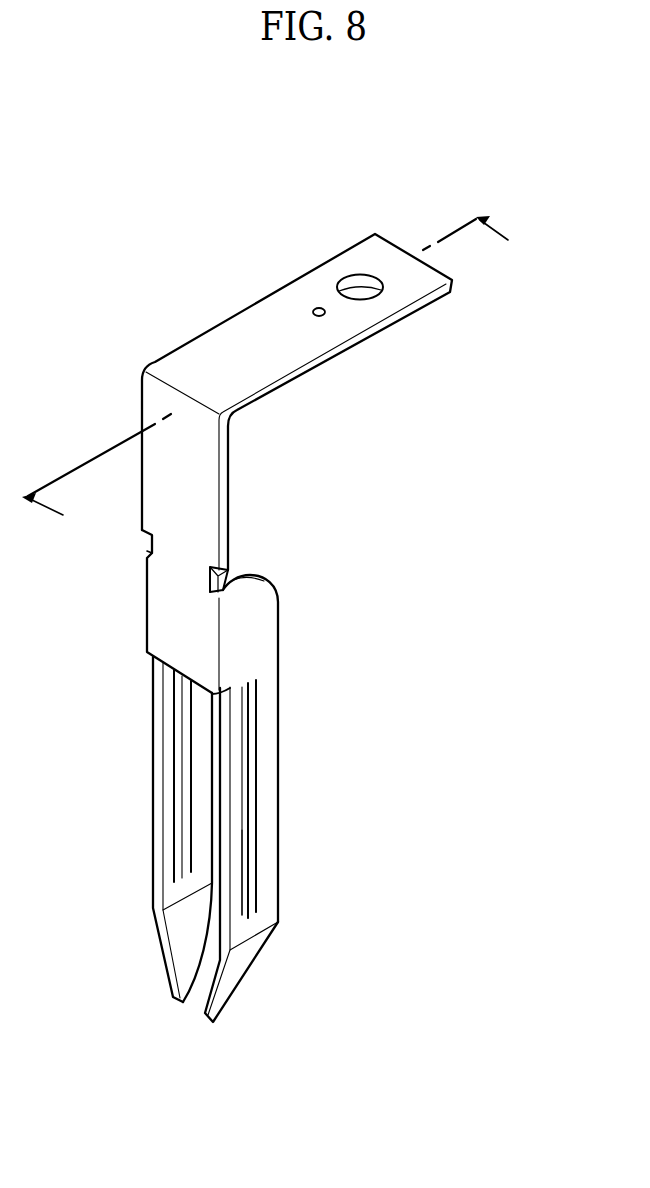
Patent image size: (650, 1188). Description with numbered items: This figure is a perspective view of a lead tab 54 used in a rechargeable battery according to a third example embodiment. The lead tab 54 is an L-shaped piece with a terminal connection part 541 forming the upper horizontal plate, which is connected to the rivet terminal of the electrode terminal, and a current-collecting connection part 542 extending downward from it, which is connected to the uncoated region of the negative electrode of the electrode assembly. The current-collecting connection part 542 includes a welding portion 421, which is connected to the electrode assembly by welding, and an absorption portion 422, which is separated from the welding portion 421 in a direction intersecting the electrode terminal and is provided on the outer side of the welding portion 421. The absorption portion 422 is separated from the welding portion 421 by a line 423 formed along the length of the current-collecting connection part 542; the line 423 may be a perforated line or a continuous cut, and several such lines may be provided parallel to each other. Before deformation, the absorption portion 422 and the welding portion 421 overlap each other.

The lead tab 54 is at (253, 168).
The terminal connection part 541 is at (221, 331).
The current-collecting connection part 542 is at (133, 752).
The welding portion 421 is at (267, 720).
The absorption portion 422 is at (237, 810).
The line 423 is at (245, 837).